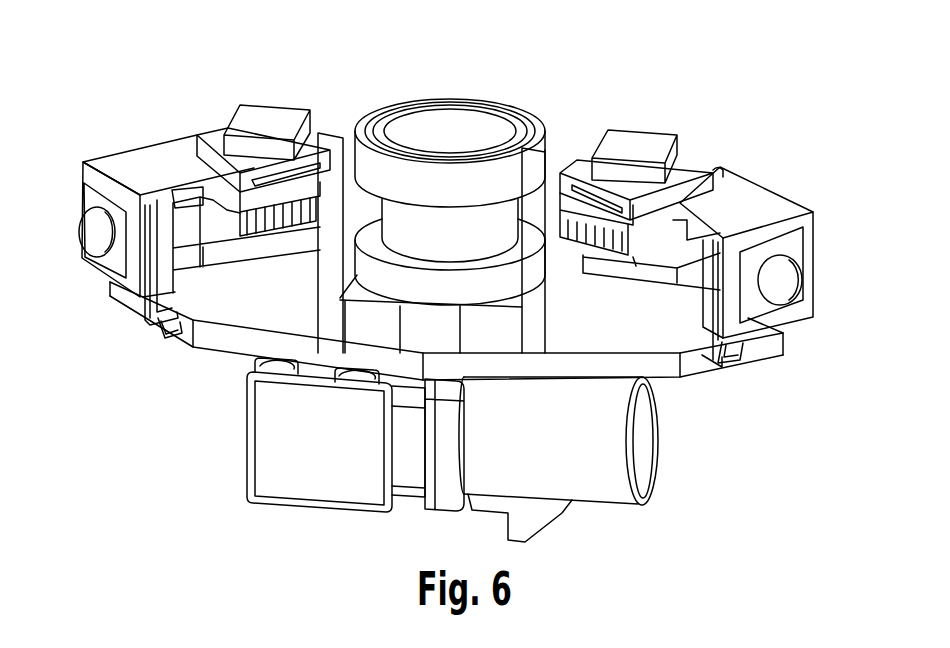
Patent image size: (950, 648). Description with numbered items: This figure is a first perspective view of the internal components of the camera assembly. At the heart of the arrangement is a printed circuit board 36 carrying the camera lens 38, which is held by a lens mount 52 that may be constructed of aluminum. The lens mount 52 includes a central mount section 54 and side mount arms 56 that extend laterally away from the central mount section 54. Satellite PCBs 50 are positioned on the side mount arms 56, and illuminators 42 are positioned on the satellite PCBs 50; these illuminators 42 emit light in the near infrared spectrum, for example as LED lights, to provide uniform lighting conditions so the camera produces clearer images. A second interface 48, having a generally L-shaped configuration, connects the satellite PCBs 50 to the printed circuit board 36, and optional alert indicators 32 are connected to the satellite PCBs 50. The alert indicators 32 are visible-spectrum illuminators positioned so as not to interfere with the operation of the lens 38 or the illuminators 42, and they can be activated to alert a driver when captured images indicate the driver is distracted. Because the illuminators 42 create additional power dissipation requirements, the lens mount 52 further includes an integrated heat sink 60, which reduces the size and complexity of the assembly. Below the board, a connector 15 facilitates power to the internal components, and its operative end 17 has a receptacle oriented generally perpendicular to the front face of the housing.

The connector 15 is at (591, 516).
The operative end 17 is at (686, 447).
The alert indicators 32 is at (85, 240).
The printed circuit board 36 is at (245, 303).
The camera lens 38 is at (444, 128).
The illuminators 42 is at (262, 113).
The second interface 48 is at (133, 303).
The satellite PCBs 50 is at (94, 165).
The lens mount 52 is at (750, 172).
The central mount section 54 is at (571, 160).
The side mount arms 56 is at (157, 160).
The integrated heat sink 60 is at (323, 220).